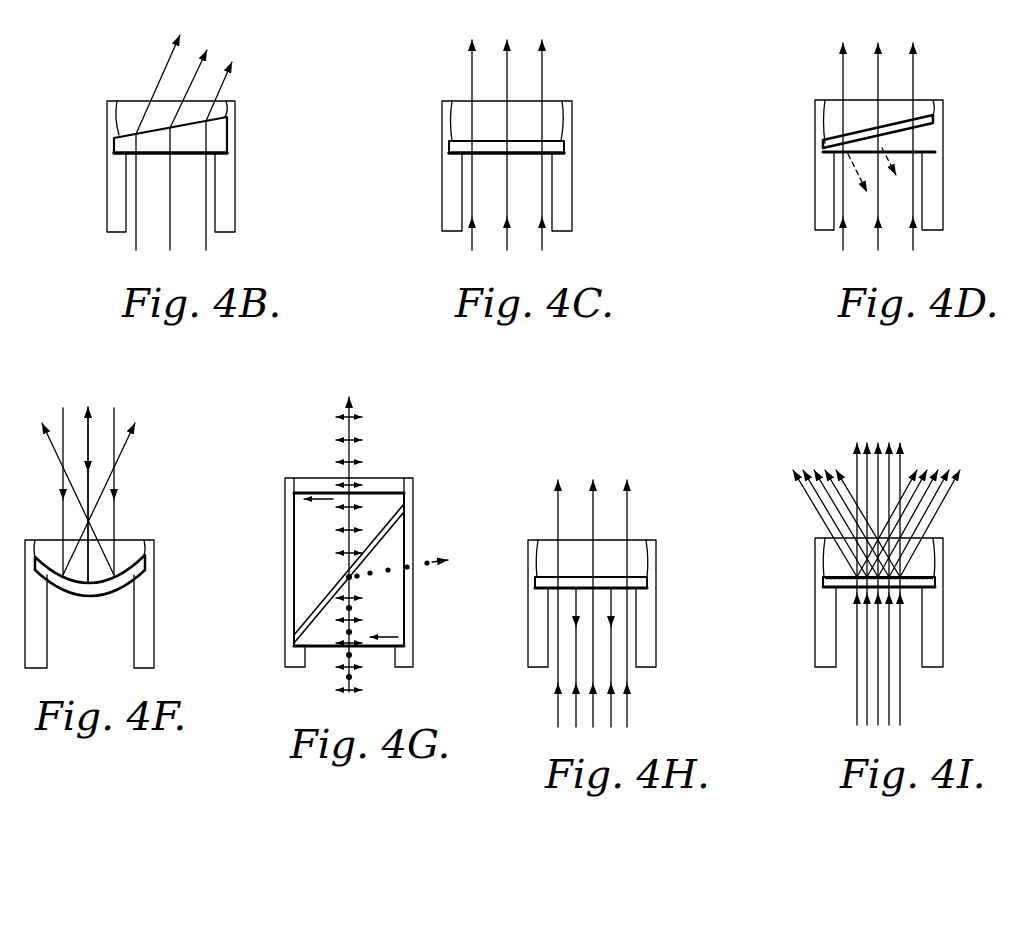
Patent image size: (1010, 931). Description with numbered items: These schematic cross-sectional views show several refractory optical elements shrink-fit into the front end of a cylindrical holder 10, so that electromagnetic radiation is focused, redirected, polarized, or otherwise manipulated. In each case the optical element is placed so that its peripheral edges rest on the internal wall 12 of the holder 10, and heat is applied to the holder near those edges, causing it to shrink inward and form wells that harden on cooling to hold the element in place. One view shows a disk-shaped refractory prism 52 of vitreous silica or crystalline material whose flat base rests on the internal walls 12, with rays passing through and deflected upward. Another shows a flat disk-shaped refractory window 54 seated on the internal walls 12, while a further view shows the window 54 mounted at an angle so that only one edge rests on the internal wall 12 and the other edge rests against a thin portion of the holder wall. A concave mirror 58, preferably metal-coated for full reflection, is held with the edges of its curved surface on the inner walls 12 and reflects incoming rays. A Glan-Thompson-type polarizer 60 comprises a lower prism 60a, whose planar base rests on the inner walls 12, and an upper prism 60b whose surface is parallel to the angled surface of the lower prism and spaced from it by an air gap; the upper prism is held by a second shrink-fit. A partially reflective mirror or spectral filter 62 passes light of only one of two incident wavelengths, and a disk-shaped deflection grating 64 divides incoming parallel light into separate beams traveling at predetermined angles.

In FIG. 4B, the holder 10 is at (230, 187).
In FIG. 4C, the holder 10 is at (568, 185).
In FIG. 4D, the holder 10 is at (819, 185).
In FIG. 4F, the holder 10 is at (150, 657).
In FIG. 4G, the holder 10 is at (413, 530).
In FIG. 4H, the holder 10 is at (650, 652).
In FIG. 4I, the holder 10 is at (932, 651).
In FIG. 4B, the internal wall 12 is at (232, 157).
In FIG. 4C, the internal wall 12 is at (565, 163).
In FIG. 4D, the internal wall 12 is at (942, 151).
In FIG. 4F, the internal wall 12 is at (143, 583).
In FIG. 4G, the internal wall 12 is at (404, 655).
In FIG. 4H, the internal wall 12 is at (645, 590).
In FIG. 4I, the internal wall 12 is at (942, 592).
In FIG. 4B, the refractory prism 52 is at (130, 133).
In FIG. 4C, the refractory window 54 is at (455, 141).
In FIG. 4D, the refractory window 54 is at (923, 118).
In FIG. 4F, the mirror 58 is at (137, 560).
In FIG. 4G, the polarizer 60 is at (381, 488).
In FIG. 4G, the lower prism 60a is at (380, 605).
In FIG. 4G, the upper prism 60b is at (297, 556).
In FIG. 4H, the spectral filter 62 is at (637, 578).
In FIG. 4I, the deflection grating 64 is at (829, 578).